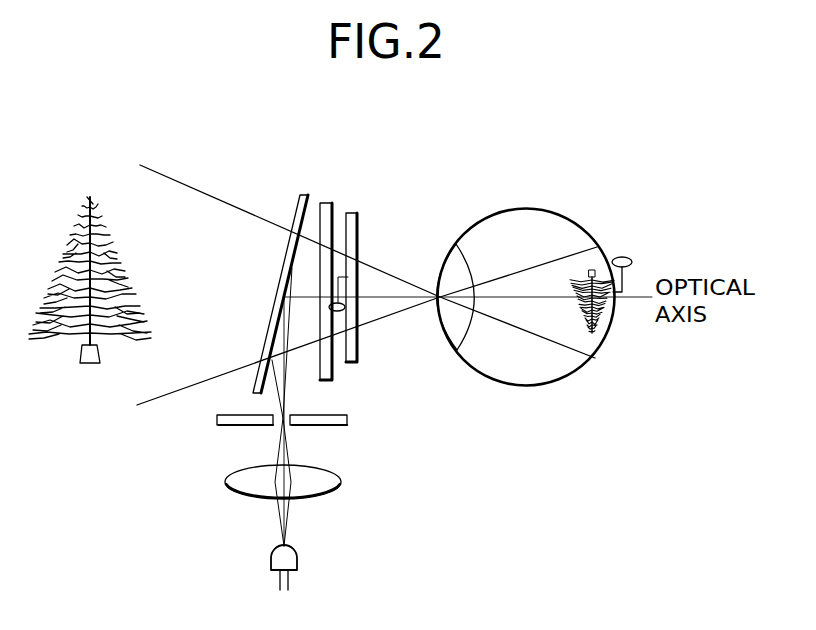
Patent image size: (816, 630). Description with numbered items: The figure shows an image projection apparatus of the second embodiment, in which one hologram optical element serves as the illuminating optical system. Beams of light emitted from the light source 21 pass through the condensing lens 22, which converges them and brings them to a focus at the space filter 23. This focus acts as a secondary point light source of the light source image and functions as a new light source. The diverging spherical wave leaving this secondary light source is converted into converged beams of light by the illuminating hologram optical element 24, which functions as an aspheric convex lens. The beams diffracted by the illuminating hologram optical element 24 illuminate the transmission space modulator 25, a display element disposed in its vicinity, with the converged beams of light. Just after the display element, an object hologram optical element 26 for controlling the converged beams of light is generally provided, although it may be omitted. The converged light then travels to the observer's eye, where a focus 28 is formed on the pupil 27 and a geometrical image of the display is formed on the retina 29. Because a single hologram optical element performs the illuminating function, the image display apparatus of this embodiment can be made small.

The light source 21 is at (272, 562).
The condensing lens 22 is at (233, 493).
The space filter 23 is at (232, 425).
The illuminating hologram optical element 24 is at (284, 255).
The transmission space modulator 25 is at (326, 203).
The object hologram optical element 26 is at (355, 213).
The pupil 27 is at (438, 290).
The focus 28 is at (450, 332).
The retina 29 is at (600, 345).